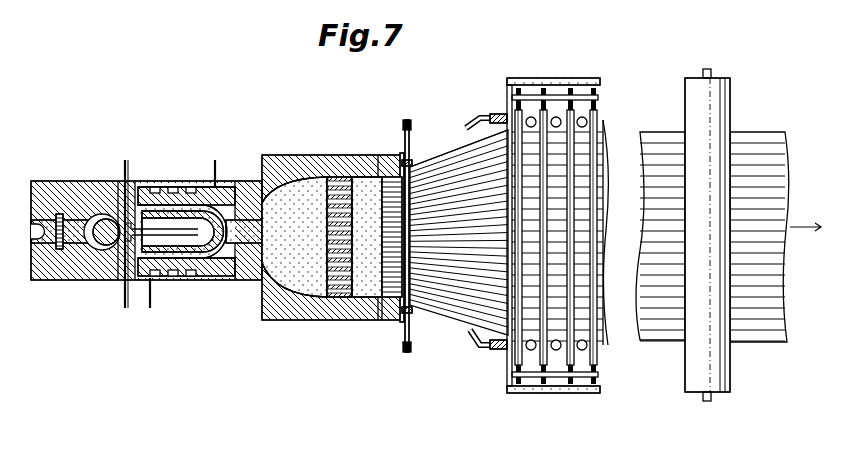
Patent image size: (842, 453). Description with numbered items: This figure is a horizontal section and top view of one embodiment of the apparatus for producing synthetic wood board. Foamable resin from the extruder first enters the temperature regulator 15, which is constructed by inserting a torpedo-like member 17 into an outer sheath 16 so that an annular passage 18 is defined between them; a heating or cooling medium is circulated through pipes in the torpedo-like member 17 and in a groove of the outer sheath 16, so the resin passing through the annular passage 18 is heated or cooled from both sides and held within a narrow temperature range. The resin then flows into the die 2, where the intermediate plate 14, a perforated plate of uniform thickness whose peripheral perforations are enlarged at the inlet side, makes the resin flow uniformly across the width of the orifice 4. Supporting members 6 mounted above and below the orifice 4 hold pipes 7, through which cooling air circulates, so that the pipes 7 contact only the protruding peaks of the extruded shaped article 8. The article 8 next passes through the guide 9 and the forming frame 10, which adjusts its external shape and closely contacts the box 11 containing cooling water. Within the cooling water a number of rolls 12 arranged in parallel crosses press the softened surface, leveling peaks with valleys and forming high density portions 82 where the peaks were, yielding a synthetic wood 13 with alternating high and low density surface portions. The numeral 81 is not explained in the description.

The die 2 is at (310, 155).
The orifice 4 is at (390, 297).
The supporting members 6 is at (412, 162).
The pipes 7 is at (410, 140).
The shaped article 8 is at (452, 326).
The nozzle wall 81 is at (462, 150).
The guide 9 is at (472, 120).
The forming frame 10 is at (496, 114).
The box 11 is at (565, 78).
The rolls 12 is at (593, 110).
The synthetic wood 13 is at (752, 132).
The high density portions 82 is at (665, 150).
The intermediate plate 14 is at (347, 177).
The temperature regulator 15 is at (194, 187).
The outer sheath 16 is at (168, 181).
The torpedo-like member 17 is at (210, 276).
The annular passage 18 is at (189, 219).